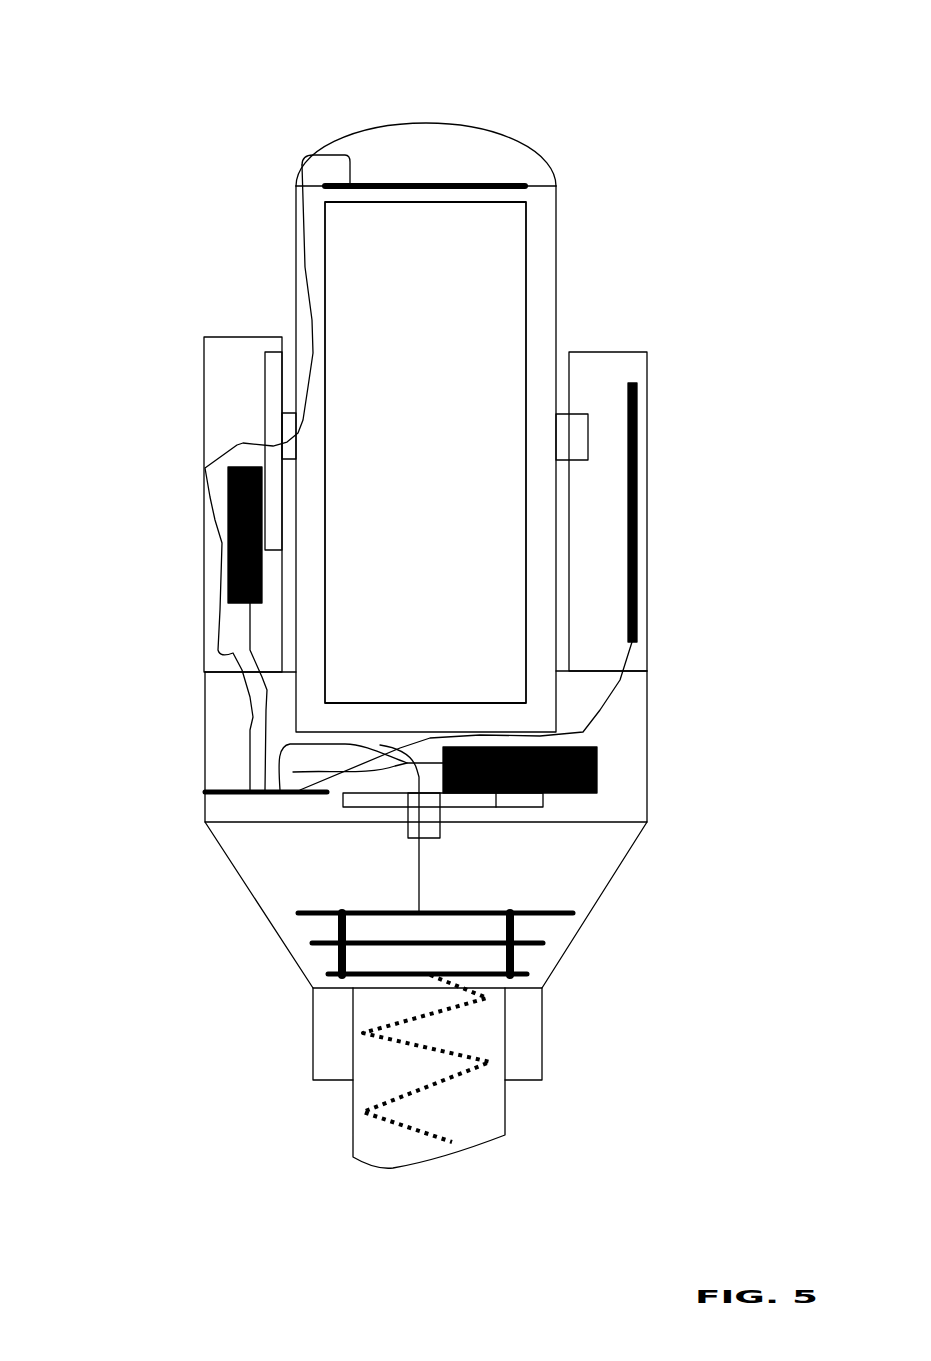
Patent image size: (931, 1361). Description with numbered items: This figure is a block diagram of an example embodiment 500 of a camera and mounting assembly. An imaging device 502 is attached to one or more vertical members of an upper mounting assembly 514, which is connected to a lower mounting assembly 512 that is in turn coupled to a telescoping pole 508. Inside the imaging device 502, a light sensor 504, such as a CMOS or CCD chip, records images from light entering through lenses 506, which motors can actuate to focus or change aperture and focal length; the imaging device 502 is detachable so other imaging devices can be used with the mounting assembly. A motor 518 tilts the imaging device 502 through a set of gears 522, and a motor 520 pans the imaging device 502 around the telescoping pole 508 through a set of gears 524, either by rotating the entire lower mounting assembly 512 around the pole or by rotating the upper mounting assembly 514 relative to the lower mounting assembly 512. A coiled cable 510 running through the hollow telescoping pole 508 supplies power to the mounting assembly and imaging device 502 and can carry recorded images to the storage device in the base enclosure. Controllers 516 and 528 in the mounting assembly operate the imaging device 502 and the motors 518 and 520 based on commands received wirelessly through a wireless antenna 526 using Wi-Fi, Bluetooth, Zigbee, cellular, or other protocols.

The embodiment of a camera and a mounting assembly 500 is at (108, 33).
The imaging device 502 is at (383, 127).
The light sensor 504 is at (525, 185).
The lenses 506 is at (512, 290).
The telescoping pole 508 is at (353, 1150).
The coiled cable 510 is at (443, 1083).
The lower mounting assembly 512 is at (235, 869).
The upper mounting assembly 514 is at (647, 352).
The controller 516 is at (227, 790).
The motor 518 is at (227, 517).
The motor 520 is at (597, 765).
The set of gears 522 is at (269, 415).
The set of gears 524 is at (520, 807).
The wireless antenna 526 is at (636, 424).
The controller 528 is at (338, 946).